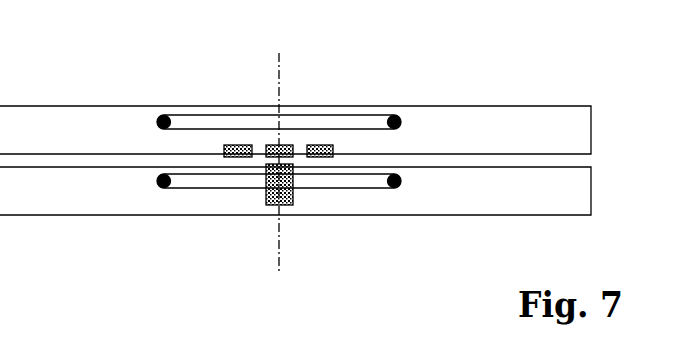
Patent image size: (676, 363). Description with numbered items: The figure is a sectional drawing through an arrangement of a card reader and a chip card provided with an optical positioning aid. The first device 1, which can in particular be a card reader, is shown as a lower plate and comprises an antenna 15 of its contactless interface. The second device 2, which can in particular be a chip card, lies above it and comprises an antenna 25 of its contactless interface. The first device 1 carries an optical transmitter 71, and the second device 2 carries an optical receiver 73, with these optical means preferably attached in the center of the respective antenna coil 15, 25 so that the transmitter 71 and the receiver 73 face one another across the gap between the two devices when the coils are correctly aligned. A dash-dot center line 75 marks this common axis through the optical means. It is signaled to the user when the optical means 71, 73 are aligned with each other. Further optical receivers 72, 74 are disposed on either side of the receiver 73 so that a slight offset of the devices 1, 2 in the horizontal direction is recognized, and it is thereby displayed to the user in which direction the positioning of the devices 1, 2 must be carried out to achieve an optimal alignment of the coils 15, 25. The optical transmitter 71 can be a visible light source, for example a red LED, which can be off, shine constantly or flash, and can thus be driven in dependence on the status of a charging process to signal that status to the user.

The first device 1 is at (453, 197).
The second device 2 is at (84, 119).
The antenna 15 is at (205, 180).
The antenna 25 is at (238, 123).
The optical transmitter 71 is at (292, 203).
The optical receiver 72 is at (245, 145).
The optical receiver 73 is at (282, 145).
The optical receiver 74 is at (318, 145).
The center axis 75 is at (278, 250).